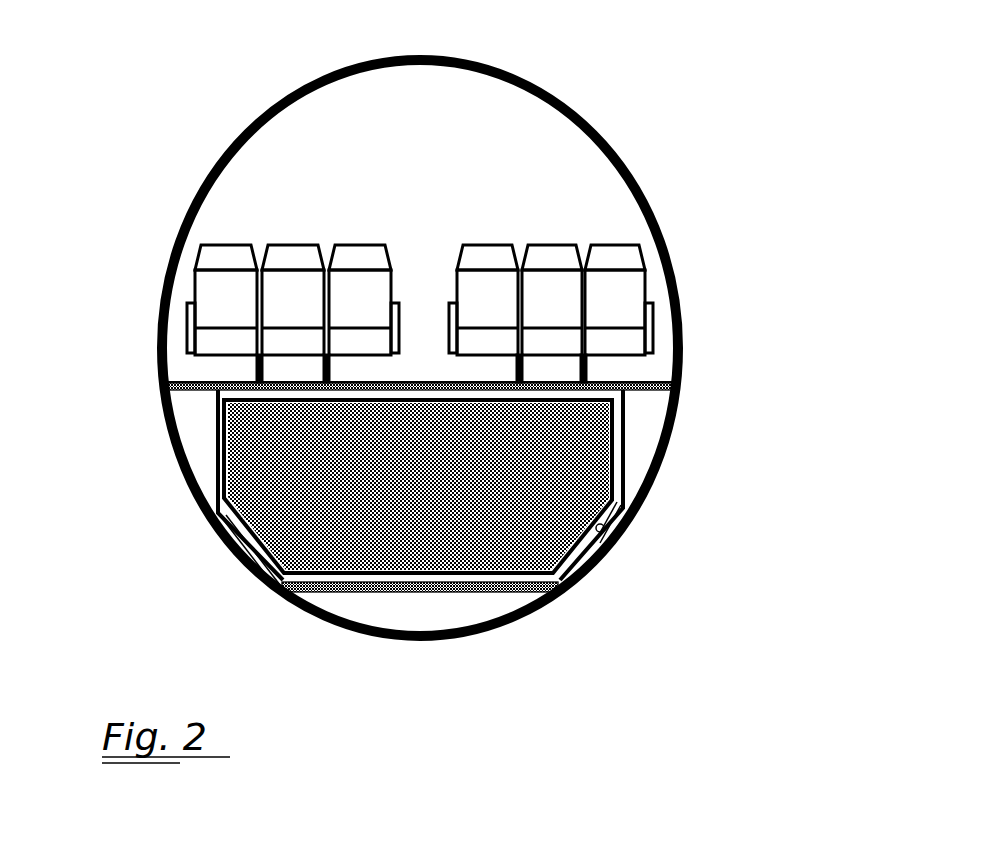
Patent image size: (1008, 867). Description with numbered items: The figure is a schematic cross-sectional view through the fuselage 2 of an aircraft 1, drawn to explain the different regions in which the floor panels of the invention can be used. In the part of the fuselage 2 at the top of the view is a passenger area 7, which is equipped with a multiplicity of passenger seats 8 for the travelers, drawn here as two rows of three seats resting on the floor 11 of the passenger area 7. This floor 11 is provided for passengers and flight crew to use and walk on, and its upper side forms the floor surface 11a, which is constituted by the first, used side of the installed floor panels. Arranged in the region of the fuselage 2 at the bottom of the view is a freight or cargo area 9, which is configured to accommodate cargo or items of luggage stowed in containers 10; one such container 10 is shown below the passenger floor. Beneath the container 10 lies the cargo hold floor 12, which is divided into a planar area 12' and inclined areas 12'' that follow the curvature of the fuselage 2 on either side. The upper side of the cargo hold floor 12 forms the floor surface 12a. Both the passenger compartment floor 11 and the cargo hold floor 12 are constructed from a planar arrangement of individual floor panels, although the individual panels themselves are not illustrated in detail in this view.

The aircraft 1 is at (445, 379).
The fuselage 2 is at (283, 103).
The passenger area 7 is at (431, 191).
The passenger seats 8 is at (223, 283).
The freight or cargo area 9 is at (442, 574).
The containers 10 is at (348, 579).
The floor of the passenger area 11 is at (486, 214).
The floor surface of the passenger compartment floor 11a is at (412, 382).
The cargo hold floor 12 is at (444, 545).
The planar area 12' is at (418, 580).
The inclined areas 12'' is at (463, 581).
The floor surface of the cargo hold floor 12a is at (353, 567).